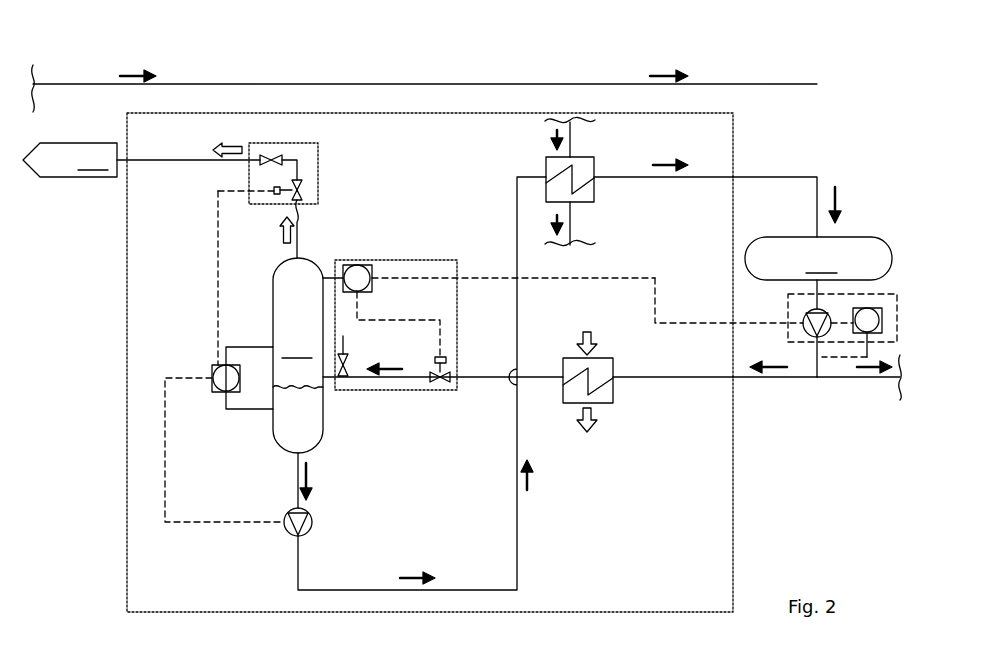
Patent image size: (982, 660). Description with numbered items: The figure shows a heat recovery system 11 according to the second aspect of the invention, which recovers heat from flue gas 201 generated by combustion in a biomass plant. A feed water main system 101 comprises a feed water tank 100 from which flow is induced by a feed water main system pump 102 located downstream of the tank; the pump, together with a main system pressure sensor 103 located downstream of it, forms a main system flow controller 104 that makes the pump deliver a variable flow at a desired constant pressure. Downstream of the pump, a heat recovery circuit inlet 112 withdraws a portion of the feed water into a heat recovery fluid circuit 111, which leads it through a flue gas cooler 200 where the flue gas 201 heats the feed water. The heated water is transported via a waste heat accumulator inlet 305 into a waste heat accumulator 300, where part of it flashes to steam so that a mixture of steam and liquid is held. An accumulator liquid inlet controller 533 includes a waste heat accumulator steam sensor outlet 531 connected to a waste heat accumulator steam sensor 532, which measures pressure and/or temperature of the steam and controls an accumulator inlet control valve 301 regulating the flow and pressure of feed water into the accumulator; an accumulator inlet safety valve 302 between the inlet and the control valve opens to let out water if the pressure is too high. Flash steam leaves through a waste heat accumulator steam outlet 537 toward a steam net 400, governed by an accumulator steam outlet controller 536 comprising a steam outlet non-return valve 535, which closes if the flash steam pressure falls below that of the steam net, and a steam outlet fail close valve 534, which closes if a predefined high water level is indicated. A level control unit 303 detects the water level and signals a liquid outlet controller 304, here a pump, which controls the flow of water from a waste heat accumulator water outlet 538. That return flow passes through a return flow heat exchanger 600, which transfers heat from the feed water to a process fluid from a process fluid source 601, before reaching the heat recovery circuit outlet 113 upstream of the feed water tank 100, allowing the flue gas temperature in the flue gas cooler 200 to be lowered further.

The heat recovery system 11 is at (125, 256).
The feed water tank 100 is at (818, 273).
The feed water main system 101 is at (338, 80).
The feed water main system pump 102 is at (808, 312).
The main system pressure sensor 103 is at (870, 340).
The main system flow controller 104 is at (788, 328).
The heat recovery fluid circuit 111 is at (680, 180).
The heat recovery circuit inlet 112 is at (808, 380).
The heat recovery circuit outlet 113 is at (787, 177).
The flue gas cooler 200 is at (614, 366).
The flue gas 201 is at (590, 371).
The waste heat accumulator 300 is at (298, 355).
The accumulator inlet control valve 301 is at (448, 352).
The accumulator inlet safety valve 302 is at (348, 360).
The level control unit 303 is at (212, 368).
The liquid outlet controller 304 is at (312, 520).
The waste heat accumulator inlet 305 is at (330, 380).
The steam net 400 is at (141, 160).
The waste heat accumulator steam sensor outlet 531 is at (333, 273).
The waste heat accumulator steam sensor 532 is at (357, 265).
The accumulator liquid inlet controller 533 is at (437, 260).
The steam outlet fail close valve 534 is at (318, 190).
The steam outlet non-return valve 535 is at (268, 153).
The accumulator steam outlet controller 536 is at (318, 160).
The waste heat accumulator steam outlet 537 is at (290, 247).
The waste heat accumulator water outlet 538 is at (296, 460).
The return flow heat exchanger 600 is at (595, 170).
The process fluid source 601 is at (572, 232).